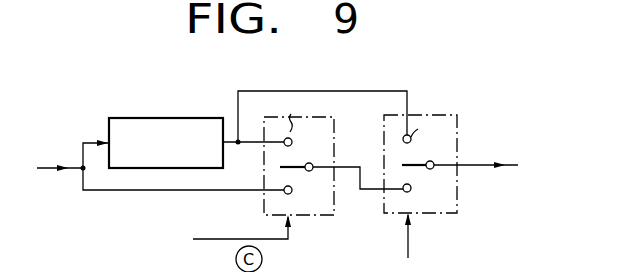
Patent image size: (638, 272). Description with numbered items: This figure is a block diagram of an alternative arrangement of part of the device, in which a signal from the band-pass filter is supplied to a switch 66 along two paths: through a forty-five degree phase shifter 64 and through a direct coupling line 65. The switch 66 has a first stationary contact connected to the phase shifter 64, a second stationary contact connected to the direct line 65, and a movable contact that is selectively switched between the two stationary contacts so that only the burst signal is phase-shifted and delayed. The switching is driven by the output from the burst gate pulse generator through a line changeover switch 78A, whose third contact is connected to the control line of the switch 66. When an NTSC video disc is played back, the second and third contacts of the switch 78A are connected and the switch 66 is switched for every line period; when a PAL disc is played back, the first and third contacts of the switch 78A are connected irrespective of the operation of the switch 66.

The 45° phase shifter 64 is at (163, 116).
The direct coupling line 65 is at (155, 192).
The switch 66 is at (314, 216).
The line changeover switch 78A is at (445, 214).